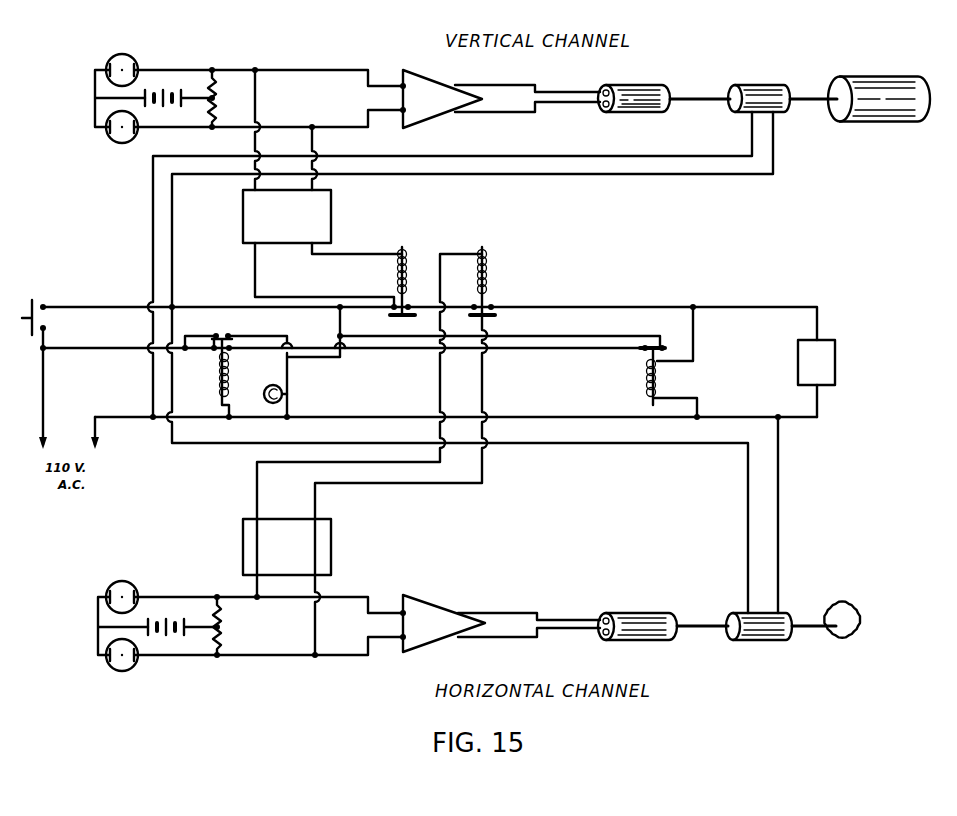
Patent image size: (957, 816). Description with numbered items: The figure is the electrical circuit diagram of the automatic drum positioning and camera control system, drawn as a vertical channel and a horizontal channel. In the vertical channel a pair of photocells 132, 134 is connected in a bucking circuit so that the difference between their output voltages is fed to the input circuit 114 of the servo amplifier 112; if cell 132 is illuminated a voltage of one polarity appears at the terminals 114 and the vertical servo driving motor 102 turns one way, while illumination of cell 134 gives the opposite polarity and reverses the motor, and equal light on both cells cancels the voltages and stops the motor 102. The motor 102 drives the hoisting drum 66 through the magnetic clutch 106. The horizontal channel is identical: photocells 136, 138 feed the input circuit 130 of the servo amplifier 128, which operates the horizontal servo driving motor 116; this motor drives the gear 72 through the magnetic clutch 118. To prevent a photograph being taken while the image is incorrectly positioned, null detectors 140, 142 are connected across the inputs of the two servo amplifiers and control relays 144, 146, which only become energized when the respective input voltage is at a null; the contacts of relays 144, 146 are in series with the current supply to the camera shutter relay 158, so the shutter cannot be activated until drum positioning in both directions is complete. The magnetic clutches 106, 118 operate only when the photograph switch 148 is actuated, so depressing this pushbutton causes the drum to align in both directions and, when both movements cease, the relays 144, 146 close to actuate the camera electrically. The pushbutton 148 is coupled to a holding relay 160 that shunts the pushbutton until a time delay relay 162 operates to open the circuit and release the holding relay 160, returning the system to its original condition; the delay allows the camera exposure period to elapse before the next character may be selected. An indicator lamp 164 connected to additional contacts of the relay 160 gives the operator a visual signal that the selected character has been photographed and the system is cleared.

The photocell 132 is at (136, 42).
The photocell 134 is at (111, 143).
The input circuit 114 is at (403, 109).
The servo amplifier 112 is at (440, 117).
The vertical servo driving motor 102 is at (635, 112).
The magnetic clutch 106 is at (738, 113).
The drum 66 is at (885, 122).
The null detector 140 is at (331, 222).
The relay 144 is at (425, 244).
The relay 146 is at (510, 246).
The photograph switch 148 is at (49, 284).
The holding relay 160 is at (232, 390).
The indicator lamp 164 is at (265, 398).
The time delay relay 162 is at (660, 382).
The camera shutter relay 158 is at (835, 346).
The null detector 142 is at (331, 545).
The photocell 136 is at (135, 572).
The photocell 138 is at (119, 672).
The input circuit 130 is at (403, 636).
The servo amplifier 128 is at (437, 612).
The horizontal servo driving motor 116 is at (658, 593).
The magnetic clutch 118 is at (737, 612).
The gear 72 is at (853, 610).